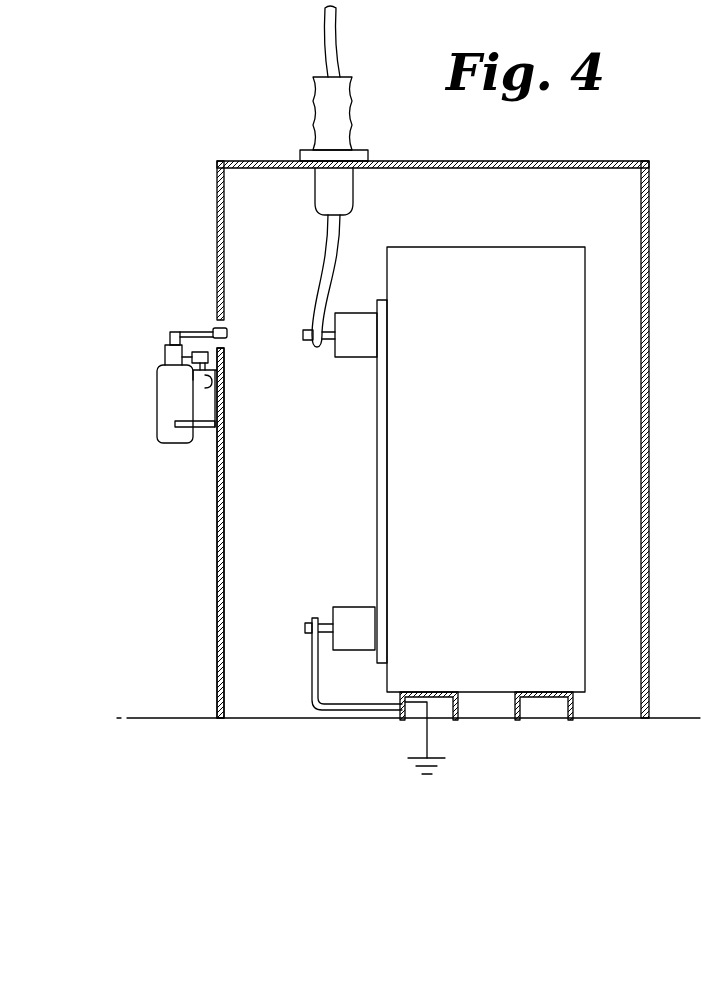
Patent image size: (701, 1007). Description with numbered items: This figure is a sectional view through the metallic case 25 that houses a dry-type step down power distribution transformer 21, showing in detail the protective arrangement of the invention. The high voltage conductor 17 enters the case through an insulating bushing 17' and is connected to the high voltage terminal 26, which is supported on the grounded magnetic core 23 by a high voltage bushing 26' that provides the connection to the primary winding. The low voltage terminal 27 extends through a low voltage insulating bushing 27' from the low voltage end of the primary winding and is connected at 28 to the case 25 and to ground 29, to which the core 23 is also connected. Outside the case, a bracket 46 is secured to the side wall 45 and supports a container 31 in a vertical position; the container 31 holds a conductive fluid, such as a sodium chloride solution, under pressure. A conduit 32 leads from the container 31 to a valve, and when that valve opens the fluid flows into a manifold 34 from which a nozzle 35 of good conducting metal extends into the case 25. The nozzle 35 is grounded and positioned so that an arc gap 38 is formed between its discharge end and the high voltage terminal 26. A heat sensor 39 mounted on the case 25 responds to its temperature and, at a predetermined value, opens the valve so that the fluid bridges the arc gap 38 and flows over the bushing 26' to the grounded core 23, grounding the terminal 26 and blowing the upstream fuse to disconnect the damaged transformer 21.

The high voltage conductor 17 is at (366, 41).
The insulating bushing 17' is at (355, 146).
The step down power distribution transformer 21 is at (523, 236).
The magnetic core 23 is at (570, 257).
The metallic case 25 is at (538, 160).
The high voltage terminal 26 is at (299, 281).
The high voltage bushing 26' is at (347, 359).
The low voltage terminal 27 is at (336, 648).
The low voltage insulating bushing 27' is at (345, 597).
The connection to case 28 is at (400, 708).
The ground 29 is at (432, 753).
The container 31 is at (157, 422).
The conduit 32 is at (165, 360).
The manifold 34 is at (170, 345).
The nozzle 35 is at (228, 326).
The arc gap 38 is at (263, 336).
The heat sensor 39 is at (212, 378).
The wall 45 is at (216, 600).
The bracket 46 is at (207, 430).